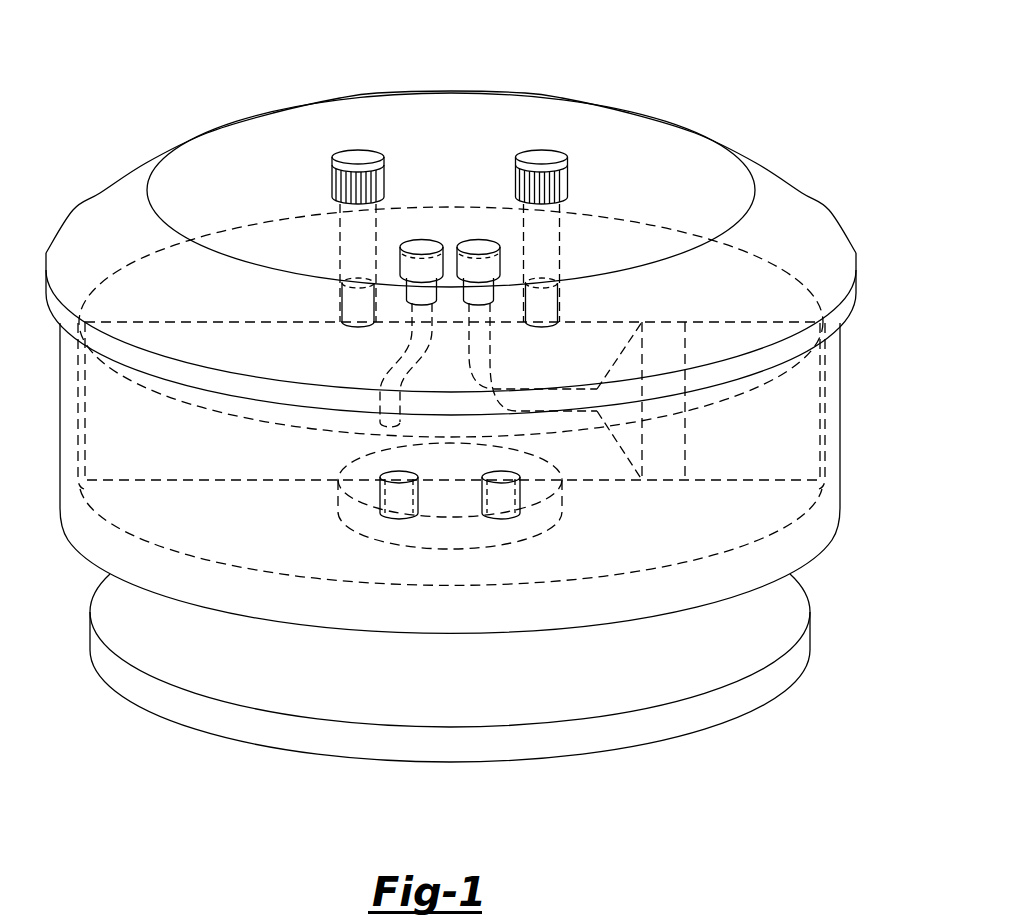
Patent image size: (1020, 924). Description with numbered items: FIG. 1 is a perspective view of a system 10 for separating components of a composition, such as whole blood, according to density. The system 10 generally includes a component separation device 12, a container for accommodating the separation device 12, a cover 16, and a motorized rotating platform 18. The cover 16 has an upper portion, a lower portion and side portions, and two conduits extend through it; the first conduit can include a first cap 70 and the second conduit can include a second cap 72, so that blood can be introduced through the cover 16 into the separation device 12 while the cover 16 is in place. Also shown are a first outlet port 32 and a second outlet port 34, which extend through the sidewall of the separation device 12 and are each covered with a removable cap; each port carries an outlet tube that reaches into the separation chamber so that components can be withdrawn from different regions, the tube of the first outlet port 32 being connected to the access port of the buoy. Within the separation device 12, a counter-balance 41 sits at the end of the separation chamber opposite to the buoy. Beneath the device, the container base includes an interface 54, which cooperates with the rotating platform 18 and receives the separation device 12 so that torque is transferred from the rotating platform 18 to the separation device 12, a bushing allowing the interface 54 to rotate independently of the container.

The system 10 is at (166, 97).
The component separation device 12 is at (480, 420).
The cover 16 is at (722, 135).
The motorized rotating platform 18 is at (803, 647).
The first outlet port 32 is at (478, 243).
The second outlet port 34 is at (421, 243).
The counter-balance 41 is at (107, 468).
The interface 54 is at (562, 503).
The first cap 70 is at (541, 152).
The second cap 72 is at (360, 152).